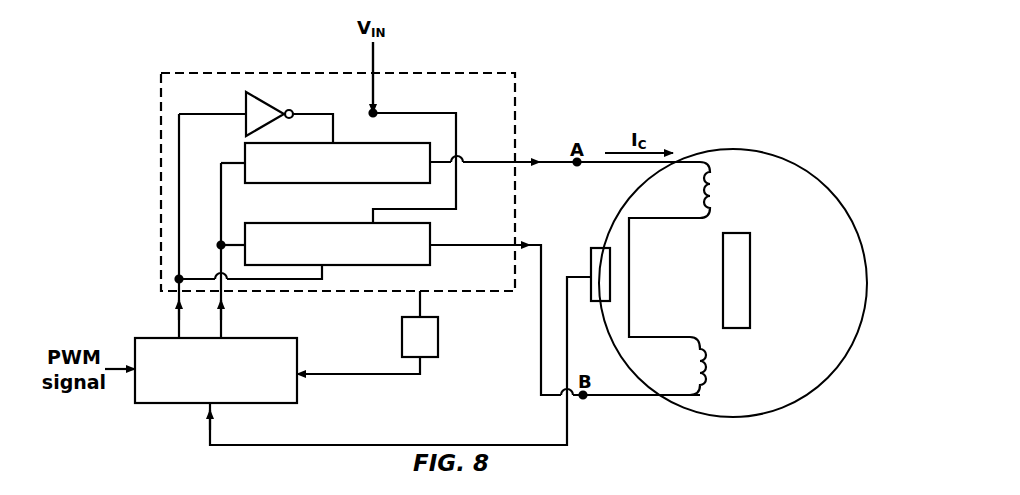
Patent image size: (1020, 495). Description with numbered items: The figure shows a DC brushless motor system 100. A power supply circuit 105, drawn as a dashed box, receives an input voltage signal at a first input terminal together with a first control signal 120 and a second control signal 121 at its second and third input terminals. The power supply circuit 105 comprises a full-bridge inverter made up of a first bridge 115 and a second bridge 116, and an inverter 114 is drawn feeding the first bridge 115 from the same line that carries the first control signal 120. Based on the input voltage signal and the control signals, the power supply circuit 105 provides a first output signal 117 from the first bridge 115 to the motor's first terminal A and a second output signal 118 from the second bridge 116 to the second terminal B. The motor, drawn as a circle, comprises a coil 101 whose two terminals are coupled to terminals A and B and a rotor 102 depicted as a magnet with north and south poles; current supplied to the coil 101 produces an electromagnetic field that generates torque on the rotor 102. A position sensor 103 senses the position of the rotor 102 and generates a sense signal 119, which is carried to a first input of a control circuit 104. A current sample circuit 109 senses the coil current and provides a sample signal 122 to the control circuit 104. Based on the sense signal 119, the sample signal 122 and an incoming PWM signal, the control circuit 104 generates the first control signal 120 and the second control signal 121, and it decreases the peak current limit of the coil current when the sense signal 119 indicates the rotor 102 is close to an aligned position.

The DC brushless motor system 100 is at (108, 92).
The coil 101 is at (713, 184).
The rotor 102 is at (751, 277).
The position sensor 103 is at (611, 271).
The control circuit 104 is at (147, 404).
The power supply circuit 105 is at (517, 80).
The current sample circuit 109 is at (438, 322).
The inverter 114 is at (276, 105).
The first bridge 115 is at (320, 184).
The second bridge 116 is at (431, 266).
The first output signal 117 is at (565, 152).
The second output signal 118 is at (565, 310).
The sense signal 119 is at (400, 361).
The first control signal 120 is at (158, 226).
The second control signal 121 is at (243, 250).
The sample signal 122 is at (358, 363).